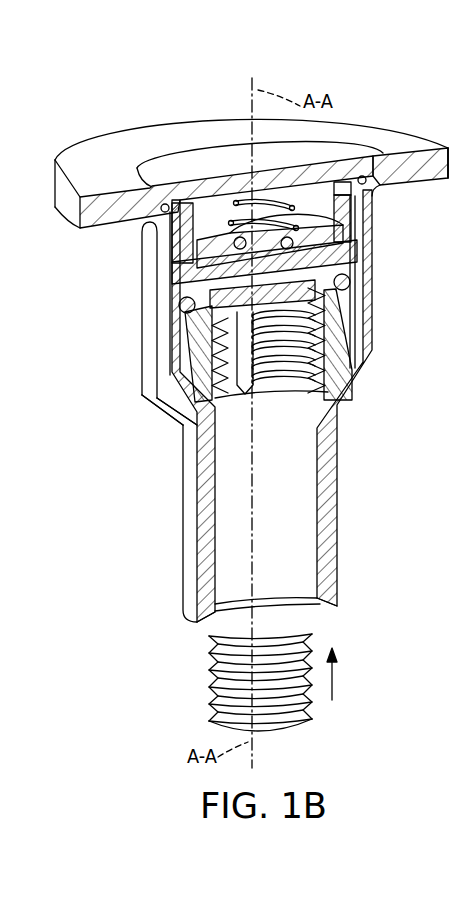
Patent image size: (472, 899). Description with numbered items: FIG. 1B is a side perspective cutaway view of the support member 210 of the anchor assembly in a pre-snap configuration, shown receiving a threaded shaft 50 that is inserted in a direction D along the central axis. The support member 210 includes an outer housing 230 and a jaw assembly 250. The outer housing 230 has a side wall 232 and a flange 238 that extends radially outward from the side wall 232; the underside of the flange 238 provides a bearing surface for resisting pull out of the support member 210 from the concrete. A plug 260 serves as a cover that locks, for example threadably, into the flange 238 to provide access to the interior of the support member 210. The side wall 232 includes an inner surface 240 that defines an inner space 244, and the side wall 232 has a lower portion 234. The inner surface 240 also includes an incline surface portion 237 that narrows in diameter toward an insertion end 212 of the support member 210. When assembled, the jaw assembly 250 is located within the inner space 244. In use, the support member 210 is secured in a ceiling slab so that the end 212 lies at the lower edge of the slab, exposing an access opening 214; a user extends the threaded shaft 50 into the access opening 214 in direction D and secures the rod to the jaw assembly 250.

The support member 210 is at (342, 122).
The plug 260 is at (241, 168).
The flange 238 is at (440, 182).
The inner space 244 is at (368, 212).
The outer housing 230 is at (380, 309).
The side wall 232 is at (368, 343).
The jaw assembly 250 is at (175, 340).
The inner surface 240 is at (148, 420).
The incline surface portion 237 is at (237, 392).
The lower portion 234 is at (182, 510).
The insertion end 212 is at (200, 624).
The access opening 214 is at (304, 618).
The threaded shaft 50 is at (210, 697).
The direction D is at (332, 690).